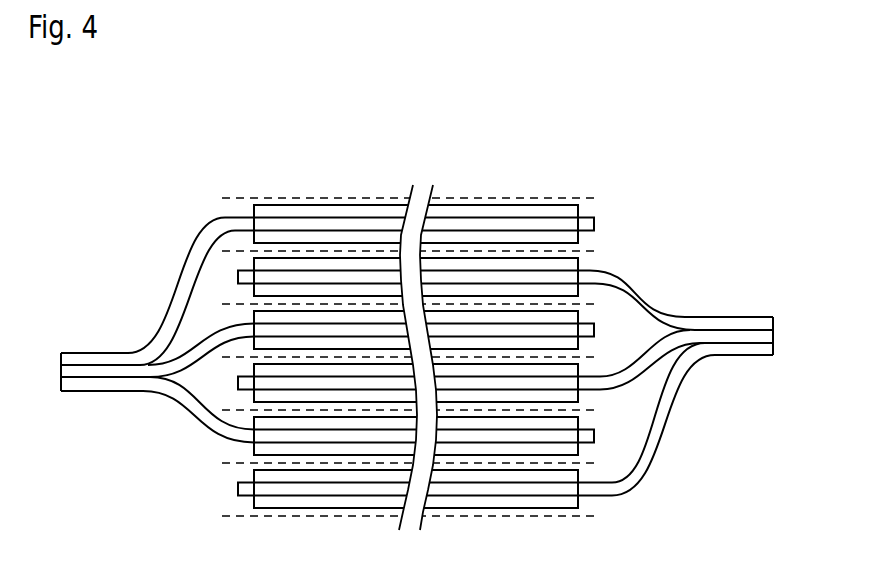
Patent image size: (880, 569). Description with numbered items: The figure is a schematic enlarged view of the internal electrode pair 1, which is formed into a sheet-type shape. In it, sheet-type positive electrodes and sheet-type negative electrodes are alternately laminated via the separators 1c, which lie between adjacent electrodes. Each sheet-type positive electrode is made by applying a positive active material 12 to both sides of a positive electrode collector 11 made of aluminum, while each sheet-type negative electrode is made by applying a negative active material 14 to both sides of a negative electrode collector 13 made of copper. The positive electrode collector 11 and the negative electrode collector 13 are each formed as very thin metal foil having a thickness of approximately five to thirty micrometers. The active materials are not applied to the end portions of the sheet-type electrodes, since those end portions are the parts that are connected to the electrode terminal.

The internal electrode pair 1 is at (370, 161).
The separator 1c is at (690, 462).
The positive electrode collector 11 is at (733, 316).
The positive active material 12 is at (573, 373).
The negative electrode collector 13 is at (85, 352).
The negative active material 14 is at (253, 453).